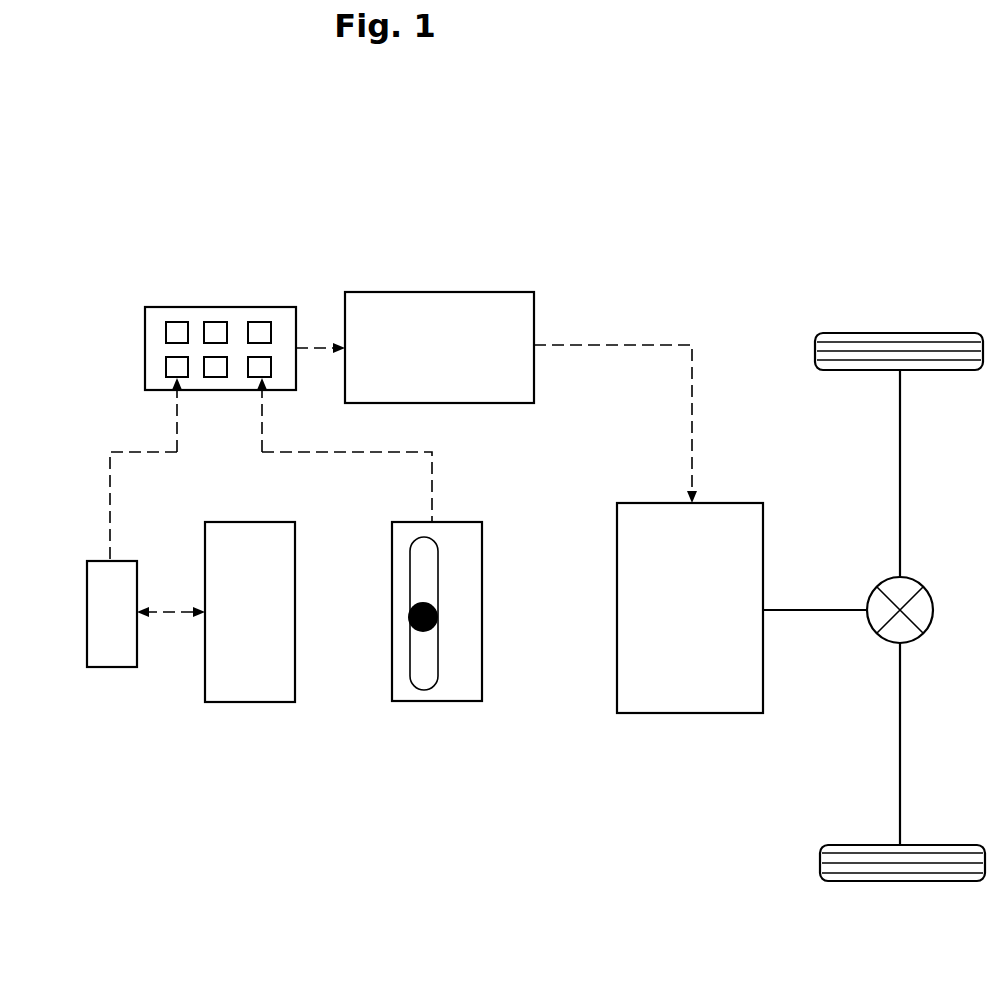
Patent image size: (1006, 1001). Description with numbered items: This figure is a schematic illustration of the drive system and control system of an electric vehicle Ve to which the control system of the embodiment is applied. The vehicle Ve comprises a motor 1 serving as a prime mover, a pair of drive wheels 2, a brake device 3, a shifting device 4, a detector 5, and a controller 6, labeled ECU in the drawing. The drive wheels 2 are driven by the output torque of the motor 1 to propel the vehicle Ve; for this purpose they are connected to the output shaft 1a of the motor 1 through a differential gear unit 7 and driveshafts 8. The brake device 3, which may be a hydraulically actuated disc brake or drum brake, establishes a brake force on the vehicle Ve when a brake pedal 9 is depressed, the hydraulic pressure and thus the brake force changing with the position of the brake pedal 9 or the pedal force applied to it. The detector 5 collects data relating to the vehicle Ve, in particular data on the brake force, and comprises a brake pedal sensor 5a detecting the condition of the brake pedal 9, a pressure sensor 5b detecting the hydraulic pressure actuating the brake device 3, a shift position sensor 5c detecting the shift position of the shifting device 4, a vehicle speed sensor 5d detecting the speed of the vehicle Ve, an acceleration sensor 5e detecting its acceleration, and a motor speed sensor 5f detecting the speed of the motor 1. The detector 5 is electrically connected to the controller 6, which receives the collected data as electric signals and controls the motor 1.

The vehicle Ve is at (696, 220).
The motor 1 is at (693, 715).
The output shaft 1a is at (822, 608).
The drive wheels 2 is at (896, 332).
The brake device 3 is at (185, 690).
The shifting device 4 is at (436, 702).
The detector 5 is at (145, 352).
The brake pedal sensor 5a is at (168, 378).
The pressure sensor 5b is at (215, 378).
The shift position sensor 5c is at (265, 378).
The vehicle speed sensor 5d is at (176, 322).
The acceleration sensor 5e is at (216, 322).
The motor speed sensor 5f is at (255, 322).
The controller 6 is at (433, 291).
The differential gear unit 7 is at (935, 611).
The driveshafts 8 is at (901, 472).
The brake pedal 9 is at (108, 668).